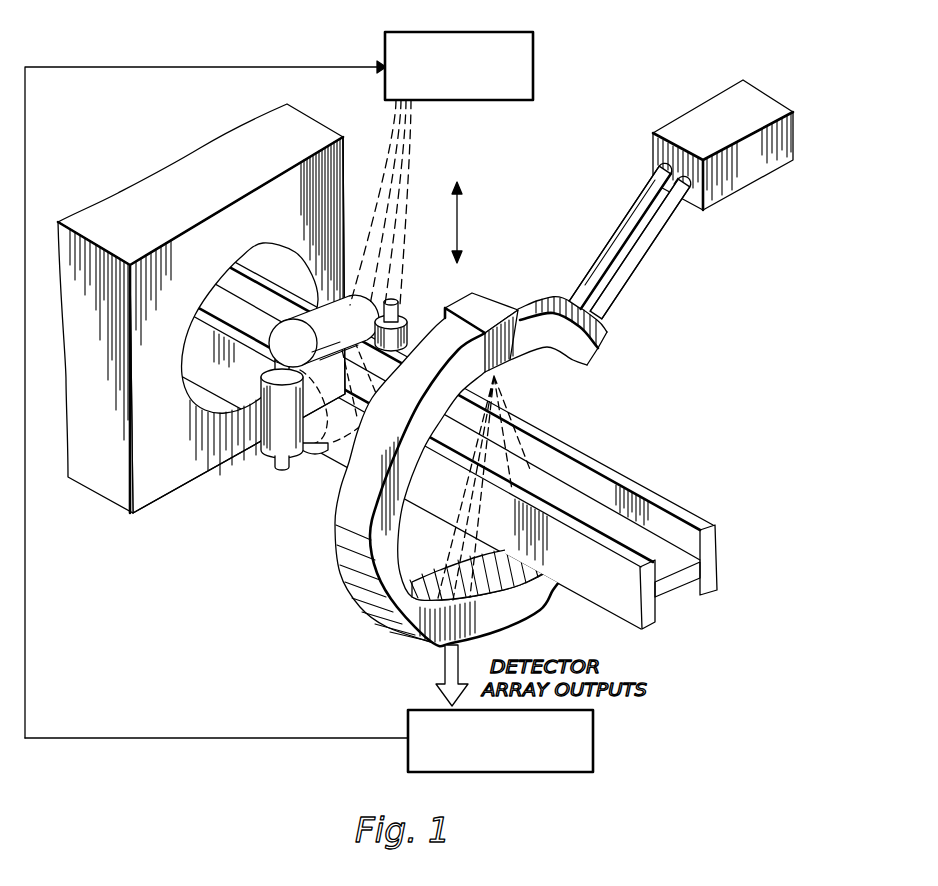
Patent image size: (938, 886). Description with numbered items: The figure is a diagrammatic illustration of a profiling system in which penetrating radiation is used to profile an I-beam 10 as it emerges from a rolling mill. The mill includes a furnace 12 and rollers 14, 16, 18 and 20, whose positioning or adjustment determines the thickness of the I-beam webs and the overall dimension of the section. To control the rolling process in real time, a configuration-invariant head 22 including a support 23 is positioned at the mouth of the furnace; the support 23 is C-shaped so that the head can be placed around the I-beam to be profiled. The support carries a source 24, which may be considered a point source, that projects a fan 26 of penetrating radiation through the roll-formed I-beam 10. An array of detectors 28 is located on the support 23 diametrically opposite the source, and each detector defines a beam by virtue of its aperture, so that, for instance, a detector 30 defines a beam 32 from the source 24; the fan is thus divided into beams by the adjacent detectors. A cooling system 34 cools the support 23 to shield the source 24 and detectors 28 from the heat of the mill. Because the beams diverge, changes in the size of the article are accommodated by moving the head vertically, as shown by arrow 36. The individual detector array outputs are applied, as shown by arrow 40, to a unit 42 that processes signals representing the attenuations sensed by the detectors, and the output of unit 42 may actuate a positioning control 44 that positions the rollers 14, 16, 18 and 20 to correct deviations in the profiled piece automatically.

The I-beam 10 is at (718, 554).
The furnace 12 is at (148, 515).
The roller 14 is at (273, 444).
The roller 16 is at (360, 300).
The roller 18 is at (393, 306).
The roller 20 is at (310, 455).
The configuration-invariant head 22 is at (474, 482).
The support 23 is at (606, 352).
The source 24 is at (480, 302).
The fan 26 is at (410, 527).
The array of detectors 28 is at (490, 607).
The detector 30 is at (414, 606).
The beam 32 is at (463, 548).
The cooling system 34 is at (735, 186).
The arrow 36 is at (460, 230).
The arrow 40 is at (436, 690).
The unit 42 is at (593, 730).
The positioning control 44 is at (503, 32).